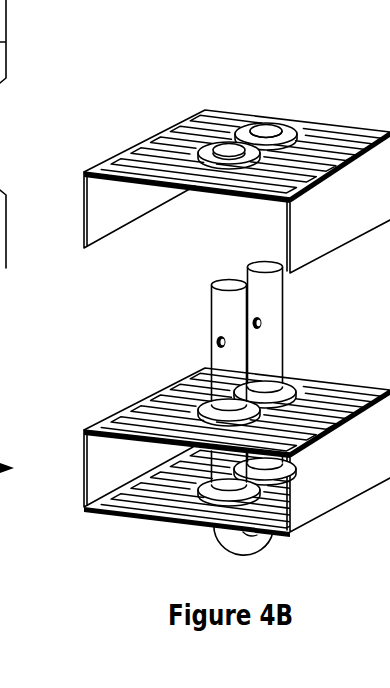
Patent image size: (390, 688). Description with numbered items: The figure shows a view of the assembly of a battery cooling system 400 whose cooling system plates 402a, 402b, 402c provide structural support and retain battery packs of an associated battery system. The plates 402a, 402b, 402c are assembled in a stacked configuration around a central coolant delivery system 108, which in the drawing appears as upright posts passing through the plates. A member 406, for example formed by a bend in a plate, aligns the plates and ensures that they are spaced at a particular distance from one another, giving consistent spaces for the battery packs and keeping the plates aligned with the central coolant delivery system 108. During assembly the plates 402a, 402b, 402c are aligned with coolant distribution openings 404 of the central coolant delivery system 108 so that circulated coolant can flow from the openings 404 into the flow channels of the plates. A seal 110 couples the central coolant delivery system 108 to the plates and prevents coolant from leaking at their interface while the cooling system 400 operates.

The battery cooling system 400 is at (165, 94).
The cooling system plate 402a is at (84, 190).
The cooling system plate 402b is at (84, 437).
The cooling system plate 402c is at (132, 513).
The coolant distribution opening 404 is at (204, 348).
The member 406 is at (6, 42).
The central coolant delivery system 108 is at (212, 303).
The seal 110 is at (310, 122).